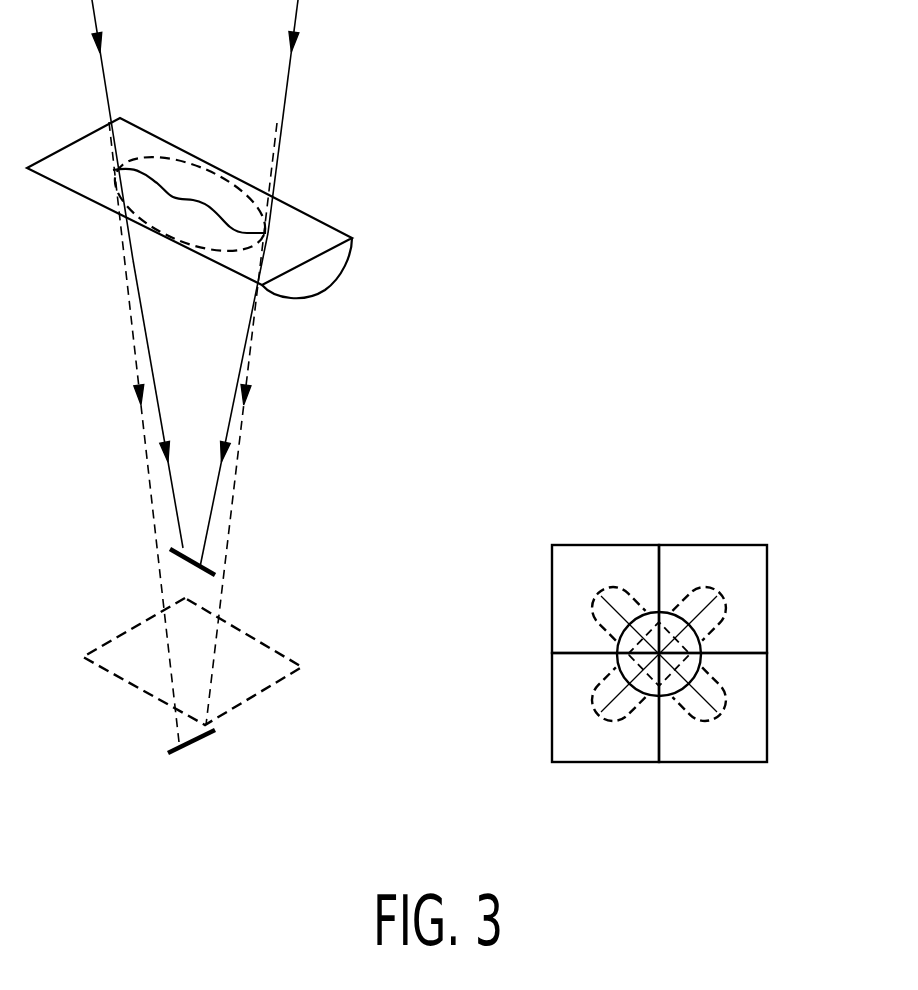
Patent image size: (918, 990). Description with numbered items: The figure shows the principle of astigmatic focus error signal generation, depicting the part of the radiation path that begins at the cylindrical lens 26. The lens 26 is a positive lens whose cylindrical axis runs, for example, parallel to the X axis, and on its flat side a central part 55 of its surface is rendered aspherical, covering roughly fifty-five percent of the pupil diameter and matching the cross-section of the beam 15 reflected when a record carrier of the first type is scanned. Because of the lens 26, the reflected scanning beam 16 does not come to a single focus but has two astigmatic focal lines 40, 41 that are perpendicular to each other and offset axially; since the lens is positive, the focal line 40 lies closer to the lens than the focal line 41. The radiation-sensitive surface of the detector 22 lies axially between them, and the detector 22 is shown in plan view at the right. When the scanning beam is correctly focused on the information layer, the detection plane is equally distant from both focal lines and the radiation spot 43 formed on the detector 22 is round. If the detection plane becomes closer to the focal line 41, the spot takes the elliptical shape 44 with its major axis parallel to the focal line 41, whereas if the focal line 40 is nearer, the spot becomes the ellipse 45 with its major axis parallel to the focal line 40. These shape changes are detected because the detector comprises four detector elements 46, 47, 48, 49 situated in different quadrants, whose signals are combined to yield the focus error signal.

The beam 15 is at (265, 75).
The reflected scanning beam 16 is at (215, 423).
The detector 22 is at (523, 604).
The cylindrical lens 26 is at (325, 232).
The focal line 40 is at (212, 567).
The focal line 41 is at (200, 740).
The radiation spot 43 is at (617, 655).
The radiation spot 44 is at (718, 610).
The radiation spot 45 is at (718, 698).
The detector element 46 is at (611, 553).
The detector element 47 is at (709, 553).
The detector element 48 is at (610, 755).
The detector element 49 is at (708, 755).
The central part of the upper surface of the cylindrical lens 55 is at (227, 197).